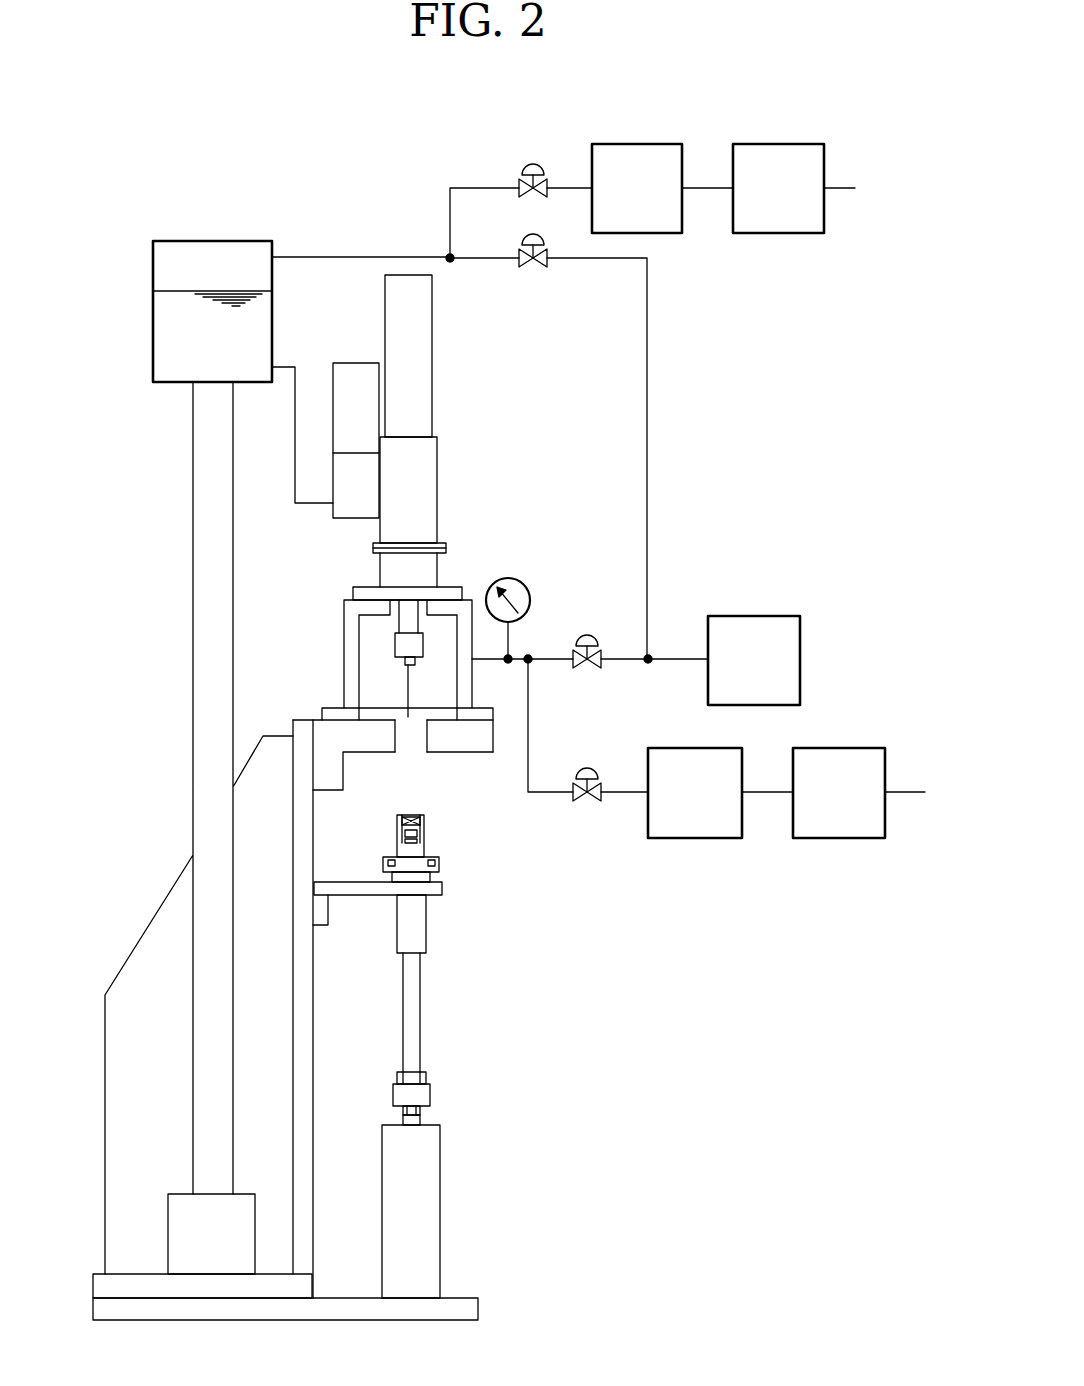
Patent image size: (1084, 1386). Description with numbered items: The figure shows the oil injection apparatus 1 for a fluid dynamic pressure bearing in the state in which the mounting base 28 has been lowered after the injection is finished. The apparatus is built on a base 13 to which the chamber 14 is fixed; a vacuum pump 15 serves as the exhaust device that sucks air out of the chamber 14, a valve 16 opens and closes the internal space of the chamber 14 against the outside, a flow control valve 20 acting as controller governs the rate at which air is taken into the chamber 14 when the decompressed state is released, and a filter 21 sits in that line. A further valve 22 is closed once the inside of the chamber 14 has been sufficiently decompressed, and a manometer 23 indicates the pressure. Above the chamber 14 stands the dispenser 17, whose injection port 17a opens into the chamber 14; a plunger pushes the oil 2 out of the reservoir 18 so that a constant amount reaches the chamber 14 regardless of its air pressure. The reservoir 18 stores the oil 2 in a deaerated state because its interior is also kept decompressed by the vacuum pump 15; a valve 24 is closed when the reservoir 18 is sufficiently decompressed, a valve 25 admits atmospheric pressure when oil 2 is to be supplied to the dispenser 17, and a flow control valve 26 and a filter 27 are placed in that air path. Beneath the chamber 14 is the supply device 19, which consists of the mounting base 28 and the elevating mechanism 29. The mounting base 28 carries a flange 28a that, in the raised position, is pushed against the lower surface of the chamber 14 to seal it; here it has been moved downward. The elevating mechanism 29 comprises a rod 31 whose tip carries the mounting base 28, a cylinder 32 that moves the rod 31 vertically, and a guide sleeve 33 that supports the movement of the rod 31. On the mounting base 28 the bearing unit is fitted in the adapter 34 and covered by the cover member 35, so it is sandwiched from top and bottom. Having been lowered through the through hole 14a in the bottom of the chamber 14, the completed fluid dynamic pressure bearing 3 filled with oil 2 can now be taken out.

The oil injection apparatus 1 is at (145, 205).
The oil 2 is at (180, 290).
The fluid dynamic pressure bearing 3 is at (371, 817).
The base 13 is at (316, 1097).
The chamber 14 is at (470, 600).
The through hole 14a is at (417, 752).
The vacuum pump 15 is at (753, 616).
The valve 16 is at (593, 803).
The dispenser 17 is at (430, 470).
The injection port 17a is at (407, 712).
The reservoir 18 is at (152, 322).
The supply device 19 is at (510, 1096).
The flow control valve 20 is at (707, 838).
The filter 21 is at (833, 838).
The valve 22 is at (590, 640).
The manometer 23 is at (517, 580).
The valve 24 is at (535, 268).
The valve 25 is at (528, 172).
The flow control valve 26 is at (640, 144).
The filter 27 is at (776, 144).
The mounting base 28 is at (430, 858).
The flange 28a is at (437, 868).
The elevating mechanism 29 is at (458, 1108).
The rod 31 is at (420, 980).
The cylinder 32 is at (423, 1258).
The guide sleeve 33 is at (417, 920).
The adapter 34 is at (400, 836).
The cover member 35 is at (404, 816).